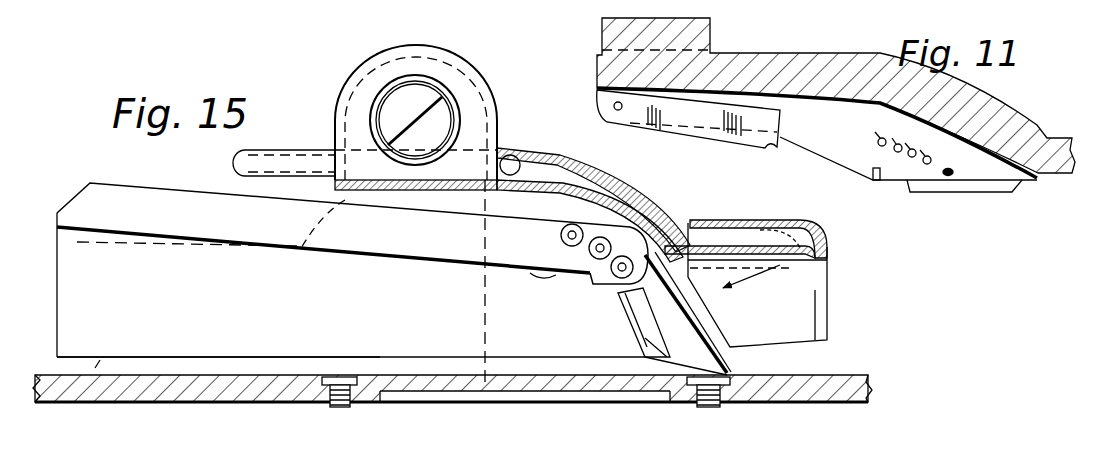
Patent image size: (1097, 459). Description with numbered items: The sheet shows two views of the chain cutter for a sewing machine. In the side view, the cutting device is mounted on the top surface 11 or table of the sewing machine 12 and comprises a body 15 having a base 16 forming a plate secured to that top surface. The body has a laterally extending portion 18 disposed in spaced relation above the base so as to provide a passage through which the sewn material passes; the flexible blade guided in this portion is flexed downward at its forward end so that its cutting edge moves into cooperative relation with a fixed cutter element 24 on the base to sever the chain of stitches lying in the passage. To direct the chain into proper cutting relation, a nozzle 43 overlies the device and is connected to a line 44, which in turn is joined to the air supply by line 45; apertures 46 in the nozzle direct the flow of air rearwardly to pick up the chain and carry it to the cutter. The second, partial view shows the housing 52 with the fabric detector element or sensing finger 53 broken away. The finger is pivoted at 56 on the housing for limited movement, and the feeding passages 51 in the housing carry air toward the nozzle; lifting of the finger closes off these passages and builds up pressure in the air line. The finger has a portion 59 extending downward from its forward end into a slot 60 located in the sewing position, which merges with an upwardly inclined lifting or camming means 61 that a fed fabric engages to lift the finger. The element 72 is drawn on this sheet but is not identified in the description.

In FIG. 15, the base 11 is at (95, 368).
In FIG. 15, the base plate 12 is at (207, 388).
In FIG. 15, the blade holder body 15 is at (52, 255).
In FIG. 15, the sole portion 16 is at (428, 362).
In FIG. 15, the blade 18 is at (360, 258).
In FIG. 15, the wedge block 24 is at (622, 335).
In FIG. 15, the guide channel 43 is at (752, 236).
In FIG. 15, the flexible strip 44 is at (630, 186).
In FIG. 15, the pivot pin 45 is at (237, 162).
In FIG. 15, the guide block 46 is at (828, 253).
In FIG. 11, the teeth 51 is at (887, 140).
In FIG. 11, the cutter body 52 is at (970, 100).
In FIG. 11, the blade plate 53 is at (747, 133).
In FIG. 11, the hole 56 is at (613, 106).
In FIG. 11, the member 59 is at (842, 0).
In FIG. 11, the member 60 is at (954, 8).
In FIG. 11, the member 61 is at (907, 0).
In FIG. 11, the member 72 is at (756, 0).